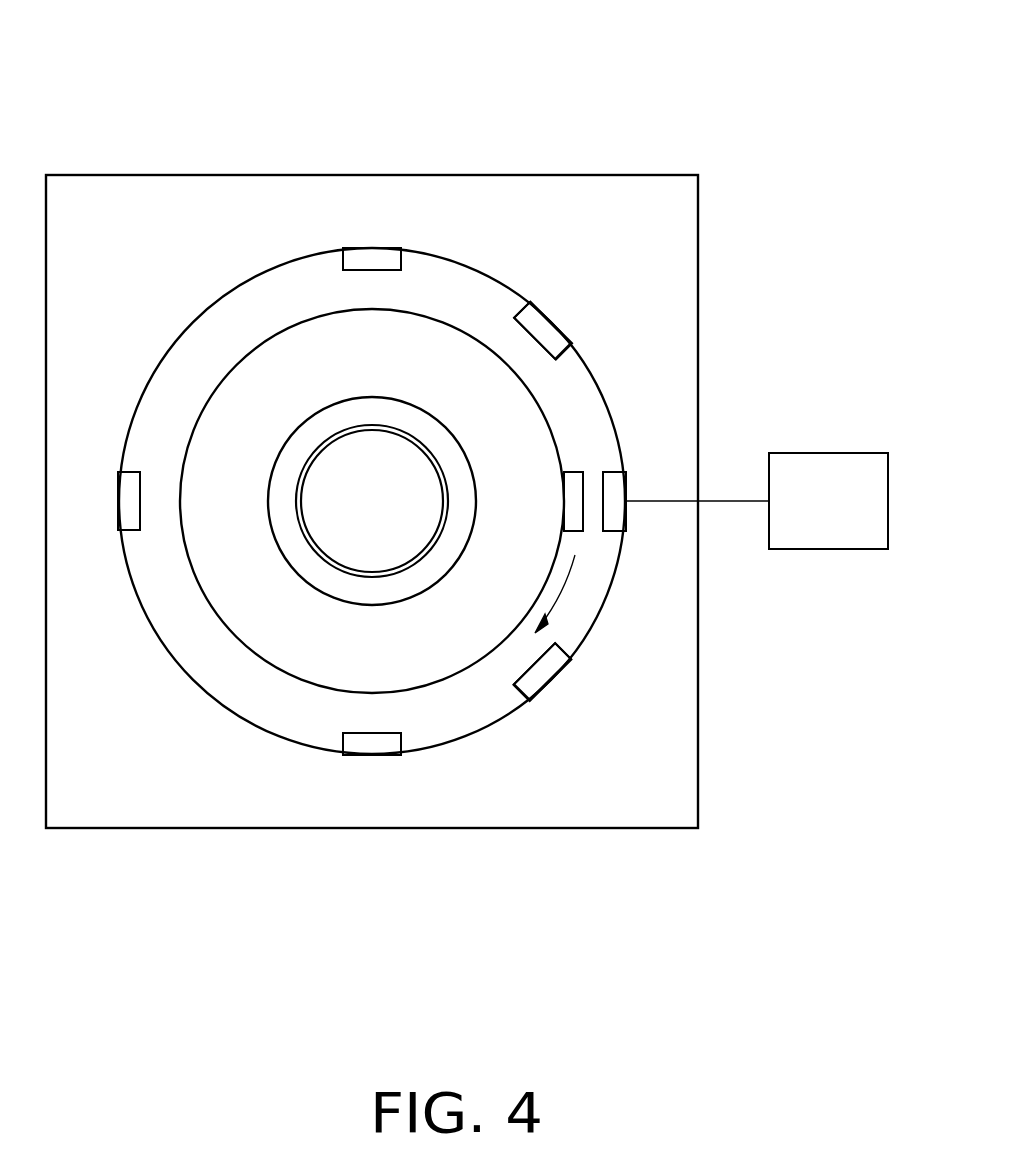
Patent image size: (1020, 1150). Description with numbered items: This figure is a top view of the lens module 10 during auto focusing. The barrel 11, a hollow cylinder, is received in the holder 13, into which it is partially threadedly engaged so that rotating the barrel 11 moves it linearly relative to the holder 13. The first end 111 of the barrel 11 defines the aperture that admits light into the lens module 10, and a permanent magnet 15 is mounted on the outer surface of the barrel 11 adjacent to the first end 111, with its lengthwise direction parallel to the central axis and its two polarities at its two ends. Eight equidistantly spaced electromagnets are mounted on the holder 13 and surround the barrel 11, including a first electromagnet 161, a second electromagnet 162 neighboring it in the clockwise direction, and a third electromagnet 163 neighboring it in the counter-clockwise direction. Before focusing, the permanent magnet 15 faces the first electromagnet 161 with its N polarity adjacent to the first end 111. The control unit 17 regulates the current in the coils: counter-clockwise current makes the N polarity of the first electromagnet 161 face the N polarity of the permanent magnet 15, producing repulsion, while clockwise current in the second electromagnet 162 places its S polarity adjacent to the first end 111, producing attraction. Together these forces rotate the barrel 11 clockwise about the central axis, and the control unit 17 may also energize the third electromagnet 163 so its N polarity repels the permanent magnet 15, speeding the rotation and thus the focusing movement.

The lens module 10 is at (420, 44).
The barrel 11 is at (377, 504).
The first end 111 is at (380, 645).
The holder 13 is at (604, 160).
The permanent magnet 15 is at (583, 532).
The first electromagnet 161 is at (623, 531).
The second electromagnet 162 is at (563, 658).
The third electromagnet 163 is at (560, 340).
The control unit 17 is at (830, 453).